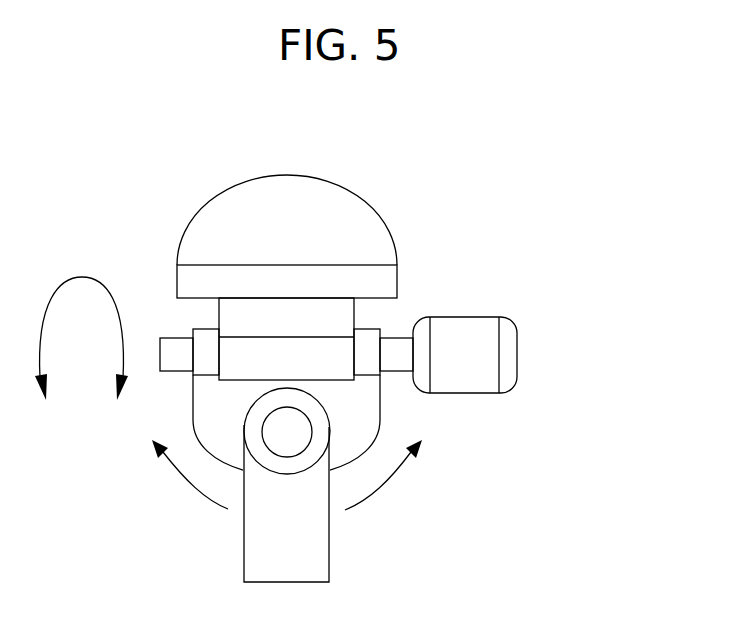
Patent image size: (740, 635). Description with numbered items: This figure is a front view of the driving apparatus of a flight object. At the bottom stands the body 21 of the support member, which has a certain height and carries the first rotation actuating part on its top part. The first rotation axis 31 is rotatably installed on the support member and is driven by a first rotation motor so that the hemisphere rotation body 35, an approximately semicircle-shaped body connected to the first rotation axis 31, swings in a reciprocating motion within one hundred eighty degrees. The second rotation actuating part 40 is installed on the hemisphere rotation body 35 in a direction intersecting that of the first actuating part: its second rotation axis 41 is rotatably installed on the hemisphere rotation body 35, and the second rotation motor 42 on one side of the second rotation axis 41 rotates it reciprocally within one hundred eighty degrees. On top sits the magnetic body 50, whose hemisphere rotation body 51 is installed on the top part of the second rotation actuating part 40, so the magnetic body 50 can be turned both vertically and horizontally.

The body 21 is at (315, 548).
The first rotation axis 31 is at (298, 432).
The hemisphere rotation body 35 is at (212, 402).
The second rotation actuating part 40 is at (527, 355).
The second rotation axis 41 is at (398, 345).
The second rotation motor 42 is at (485, 333).
The magnetic body 50 is at (385, 213).
The hemisphere rotation body 51 is at (210, 237).